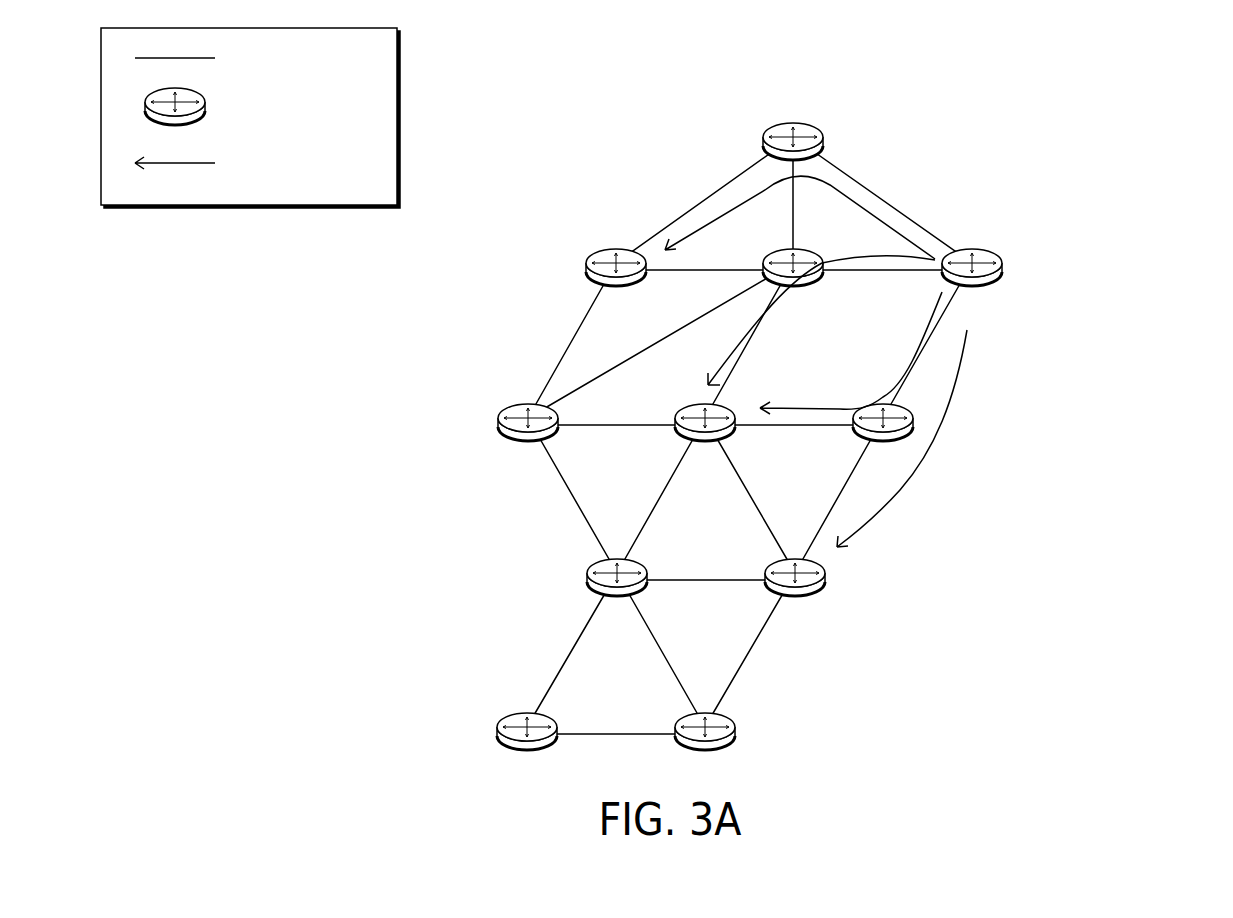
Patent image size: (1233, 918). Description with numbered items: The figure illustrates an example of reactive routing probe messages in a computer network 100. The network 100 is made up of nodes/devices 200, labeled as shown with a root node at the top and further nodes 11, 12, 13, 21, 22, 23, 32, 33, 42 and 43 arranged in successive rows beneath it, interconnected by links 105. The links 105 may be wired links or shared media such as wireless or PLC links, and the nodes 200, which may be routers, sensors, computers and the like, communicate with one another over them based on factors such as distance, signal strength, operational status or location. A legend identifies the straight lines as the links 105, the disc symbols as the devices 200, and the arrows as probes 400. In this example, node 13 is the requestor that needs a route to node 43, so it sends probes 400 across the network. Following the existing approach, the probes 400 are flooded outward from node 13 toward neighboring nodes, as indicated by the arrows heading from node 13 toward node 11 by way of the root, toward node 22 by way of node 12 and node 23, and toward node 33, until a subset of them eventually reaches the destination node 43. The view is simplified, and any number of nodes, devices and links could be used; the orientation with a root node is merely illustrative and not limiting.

The computer network 100 is at (1152, 82).
The links 105 is at (553, 390).
The nodes/devices 200 is at (254, 106).
The probes 400 is at (244, 161).
The node 11 is at (616, 287).
The node 12 is at (793, 287).
The node 13 is at (972, 287).
The node 21 is at (528, 440).
The node 22 is at (705, 440).
The node 23 is at (883, 440).
The node 32 is at (617, 595).
The node 33 is at (795, 595).
The node 42 is at (527, 749).
The node 43 is at (705, 749).